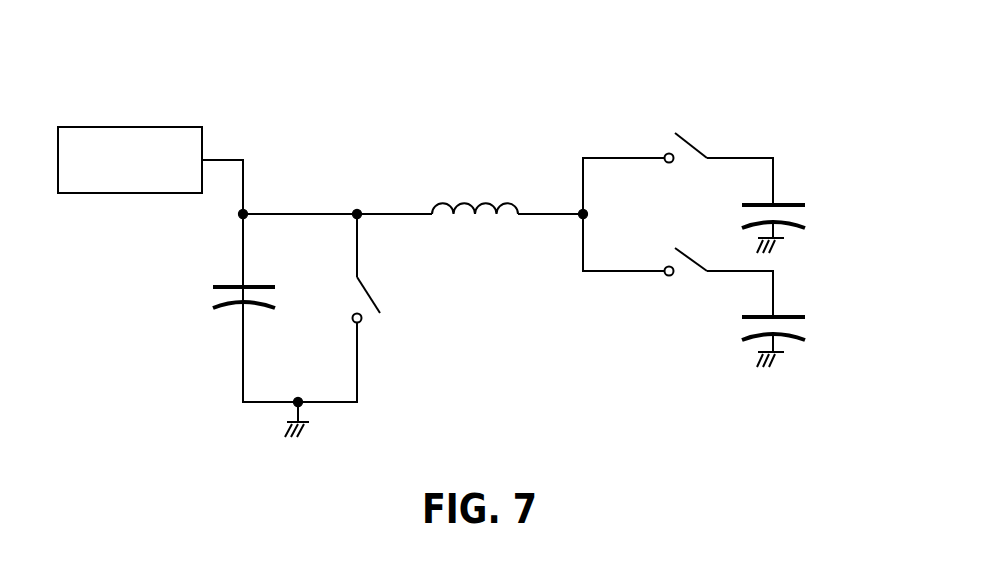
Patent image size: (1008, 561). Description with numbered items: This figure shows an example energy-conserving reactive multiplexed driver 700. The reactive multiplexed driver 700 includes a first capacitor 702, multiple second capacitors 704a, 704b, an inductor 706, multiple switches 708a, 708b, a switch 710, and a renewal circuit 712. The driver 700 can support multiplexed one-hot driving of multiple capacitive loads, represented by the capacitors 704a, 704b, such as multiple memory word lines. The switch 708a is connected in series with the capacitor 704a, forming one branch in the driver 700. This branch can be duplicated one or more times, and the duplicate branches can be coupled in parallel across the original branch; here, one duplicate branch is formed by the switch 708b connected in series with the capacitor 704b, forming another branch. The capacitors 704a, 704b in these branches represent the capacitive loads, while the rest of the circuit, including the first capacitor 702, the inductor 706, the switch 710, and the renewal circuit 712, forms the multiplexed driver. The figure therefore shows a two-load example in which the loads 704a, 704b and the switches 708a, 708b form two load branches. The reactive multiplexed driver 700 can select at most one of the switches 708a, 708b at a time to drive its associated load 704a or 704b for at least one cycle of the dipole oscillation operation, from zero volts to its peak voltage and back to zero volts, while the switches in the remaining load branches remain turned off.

The reactive multiplexed driver 700 is at (300, 72).
The first capacitor 702 is at (223, 285).
The second capacitor 704a is at (788, 200).
The second capacitor 704b is at (788, 314).
The inductor 706 is at (443, 201).
The switch 708a is at (692, 144).
The switch 708b is at (692, 257).
The switch 710 is at (370, 297).
The renewal circuit 712 is at (93, 193).